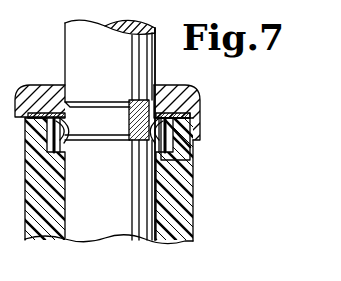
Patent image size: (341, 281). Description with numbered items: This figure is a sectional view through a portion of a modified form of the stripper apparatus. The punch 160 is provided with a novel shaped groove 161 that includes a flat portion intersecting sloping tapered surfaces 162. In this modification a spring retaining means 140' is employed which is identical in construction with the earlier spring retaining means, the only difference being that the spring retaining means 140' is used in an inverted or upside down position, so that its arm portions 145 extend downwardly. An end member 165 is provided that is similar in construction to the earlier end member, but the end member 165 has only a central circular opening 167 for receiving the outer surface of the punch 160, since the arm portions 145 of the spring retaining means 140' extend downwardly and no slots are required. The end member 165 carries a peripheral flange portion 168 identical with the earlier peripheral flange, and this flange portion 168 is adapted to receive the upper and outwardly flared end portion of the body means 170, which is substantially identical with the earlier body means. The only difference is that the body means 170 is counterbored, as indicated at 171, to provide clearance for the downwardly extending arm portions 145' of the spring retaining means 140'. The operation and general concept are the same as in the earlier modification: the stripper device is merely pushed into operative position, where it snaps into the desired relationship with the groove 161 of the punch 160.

The punch 160 is at (78, 40).
The groove 161 is at (86, 109).
The sloping tapered surfaces 162 is at (71, 100).
The seal 145 is at (109, 155).
The arm portions 145' is at (97, 127).
The central circular opening 167 is at (149, 88).
The end member 165 is at (205, 100).
The peripheral flange portion 168 is at (203, 117).
The spring retaining means 140' is at (210, 142).
The counterbore 171 is at (190, 163).
The body means 170 is at (188, 187).